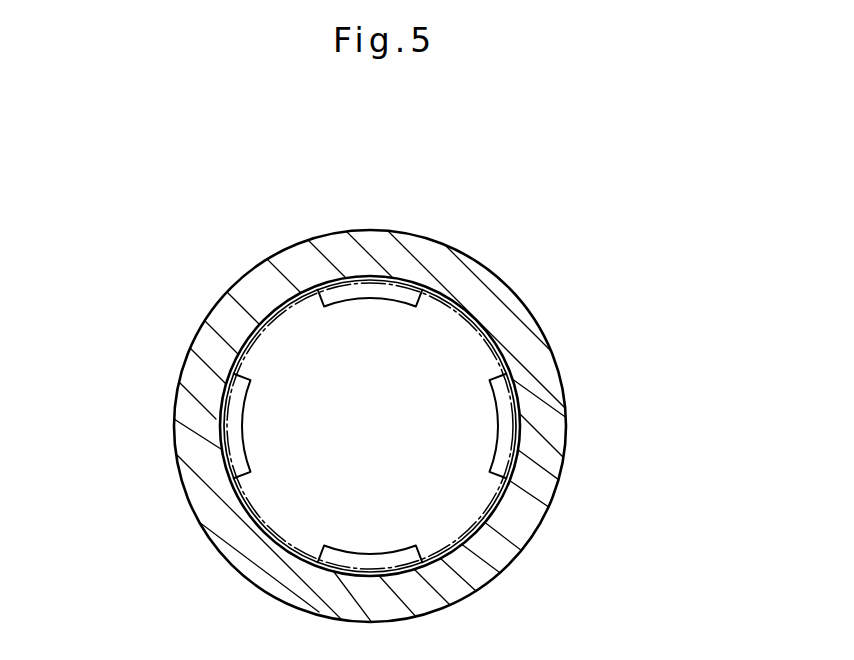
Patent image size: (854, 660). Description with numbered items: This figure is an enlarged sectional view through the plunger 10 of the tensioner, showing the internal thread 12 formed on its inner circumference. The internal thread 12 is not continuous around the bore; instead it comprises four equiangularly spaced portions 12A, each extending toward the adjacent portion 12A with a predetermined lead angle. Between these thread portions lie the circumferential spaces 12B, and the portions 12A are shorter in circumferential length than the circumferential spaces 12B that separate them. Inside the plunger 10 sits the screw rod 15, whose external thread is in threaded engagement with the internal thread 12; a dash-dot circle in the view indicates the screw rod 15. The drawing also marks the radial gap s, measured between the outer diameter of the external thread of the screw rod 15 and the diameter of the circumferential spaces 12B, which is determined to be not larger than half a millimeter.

The plunger 10 is at (212, 543).
The internal thread 12 is at (381, 421).
The equiangularly spaced portions 12A is at (340, 302).
The circumferential spaces 12B is at (247, 338).
The screw rod 15 is at (285, 547).
The radial gap s is at (440, 365).